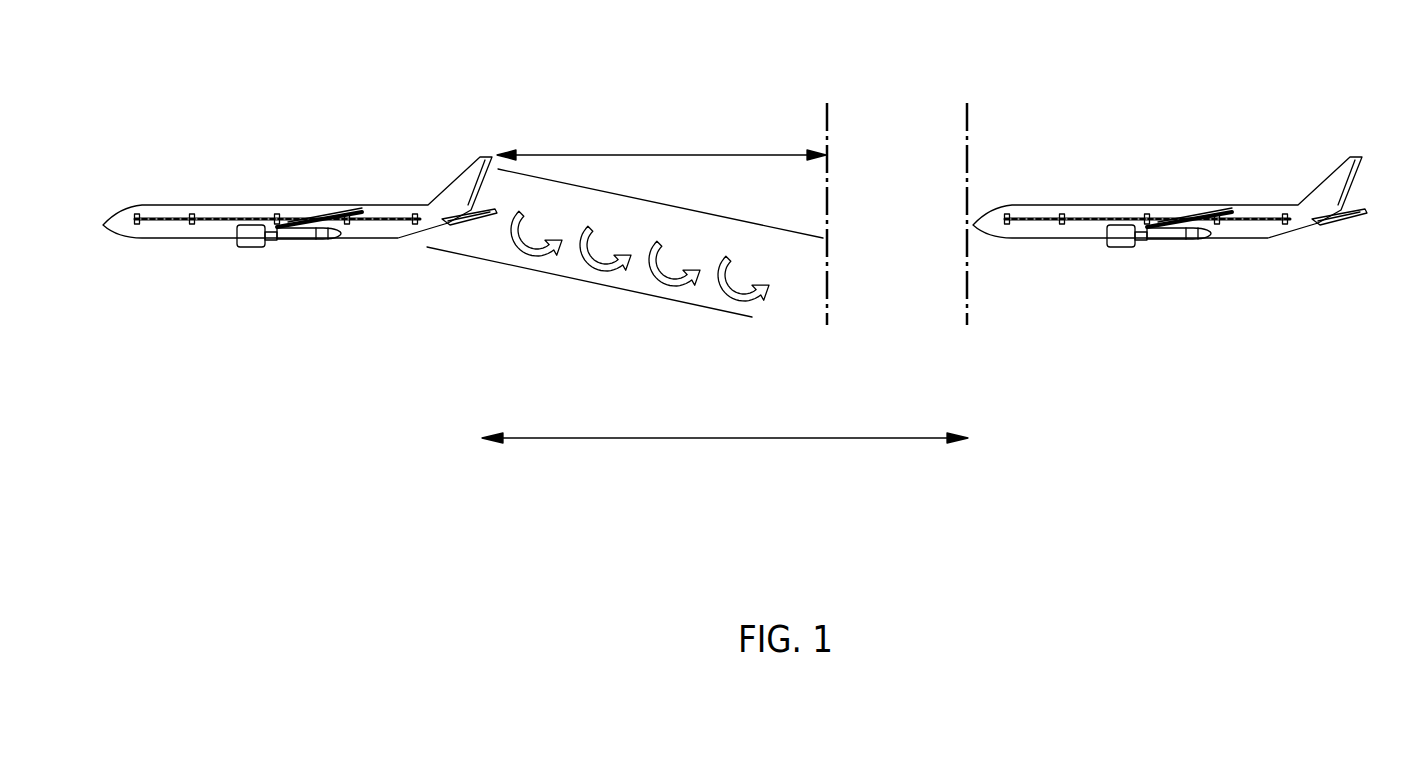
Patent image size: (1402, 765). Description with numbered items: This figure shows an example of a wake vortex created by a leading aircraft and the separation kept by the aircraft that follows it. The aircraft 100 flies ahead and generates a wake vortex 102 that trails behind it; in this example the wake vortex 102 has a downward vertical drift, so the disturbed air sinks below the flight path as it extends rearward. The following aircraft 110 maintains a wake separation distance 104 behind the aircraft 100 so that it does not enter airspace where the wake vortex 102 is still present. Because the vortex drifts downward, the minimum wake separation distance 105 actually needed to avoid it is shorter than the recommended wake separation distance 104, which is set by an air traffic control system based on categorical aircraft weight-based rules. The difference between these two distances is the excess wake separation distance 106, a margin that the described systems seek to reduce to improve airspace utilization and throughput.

The aircraft 100 is at (303, 205).
The wake vortex 102 is at (625, 267).
The wake separation distance 104 is at (723, 440).
The minimum wake separation distance 105 is at (681, 155).
The excess wake separation distance 106 is at (967, 103).
The following aircraft 110 is at (1172, 205).